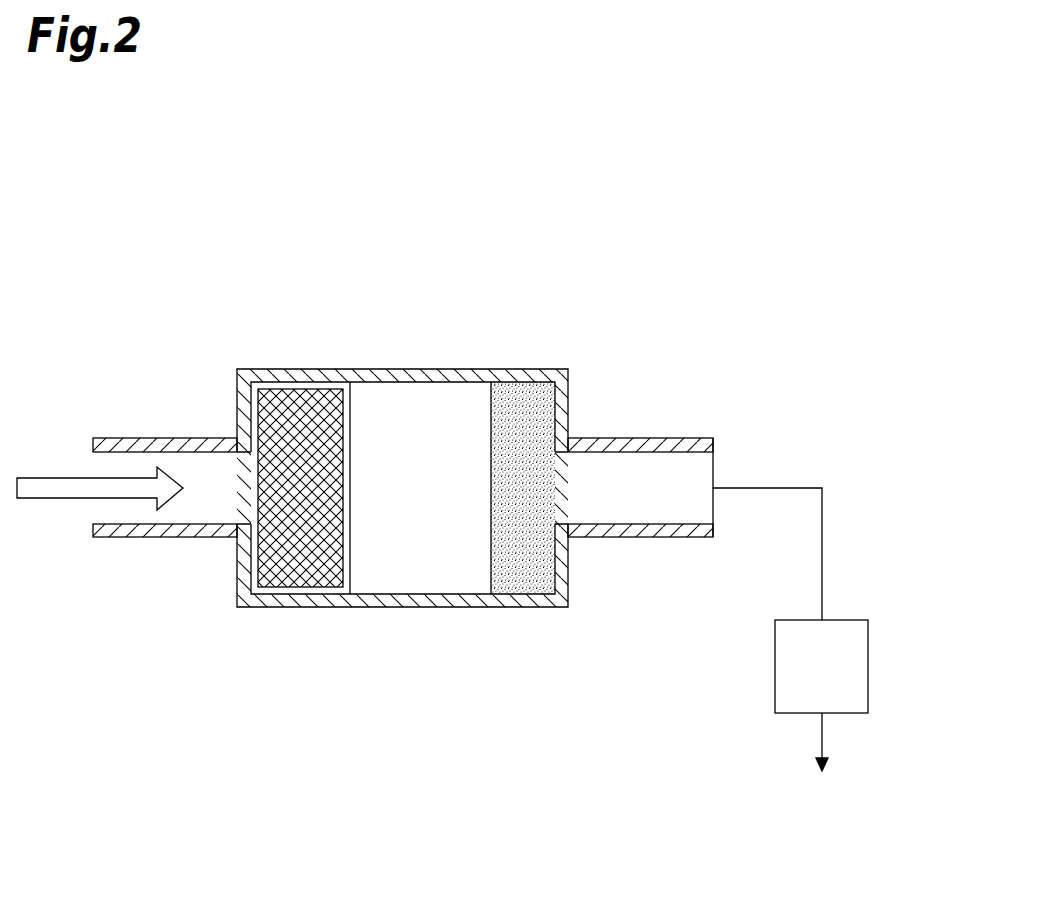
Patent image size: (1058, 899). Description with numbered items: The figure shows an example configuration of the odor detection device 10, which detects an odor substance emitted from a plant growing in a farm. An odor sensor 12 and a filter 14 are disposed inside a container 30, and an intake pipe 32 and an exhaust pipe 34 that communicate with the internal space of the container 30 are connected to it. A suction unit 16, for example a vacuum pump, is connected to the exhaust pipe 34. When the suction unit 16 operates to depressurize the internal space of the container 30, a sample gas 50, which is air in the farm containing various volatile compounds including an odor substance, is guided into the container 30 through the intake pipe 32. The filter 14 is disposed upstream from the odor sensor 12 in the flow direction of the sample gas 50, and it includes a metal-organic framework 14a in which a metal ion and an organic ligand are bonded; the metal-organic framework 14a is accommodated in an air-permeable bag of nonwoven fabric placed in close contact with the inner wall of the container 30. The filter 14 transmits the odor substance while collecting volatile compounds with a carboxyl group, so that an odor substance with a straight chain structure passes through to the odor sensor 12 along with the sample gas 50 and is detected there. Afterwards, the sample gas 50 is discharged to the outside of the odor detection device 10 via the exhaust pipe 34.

The odor detection device 10 is at (693, 303).
The odor sensor 12 is at (528, 583).
The filter 14 is at (338, 600).
The metal-organic framework 14a is at (288, 585).
The suction unit 16 is at (868, 665).
The container 30 is at (439, 369).
The intake pipe 32 is at (157, 437).
The exhaust pipe 34 is at (636, 438).
The sample gas 50 is at (53, 477).